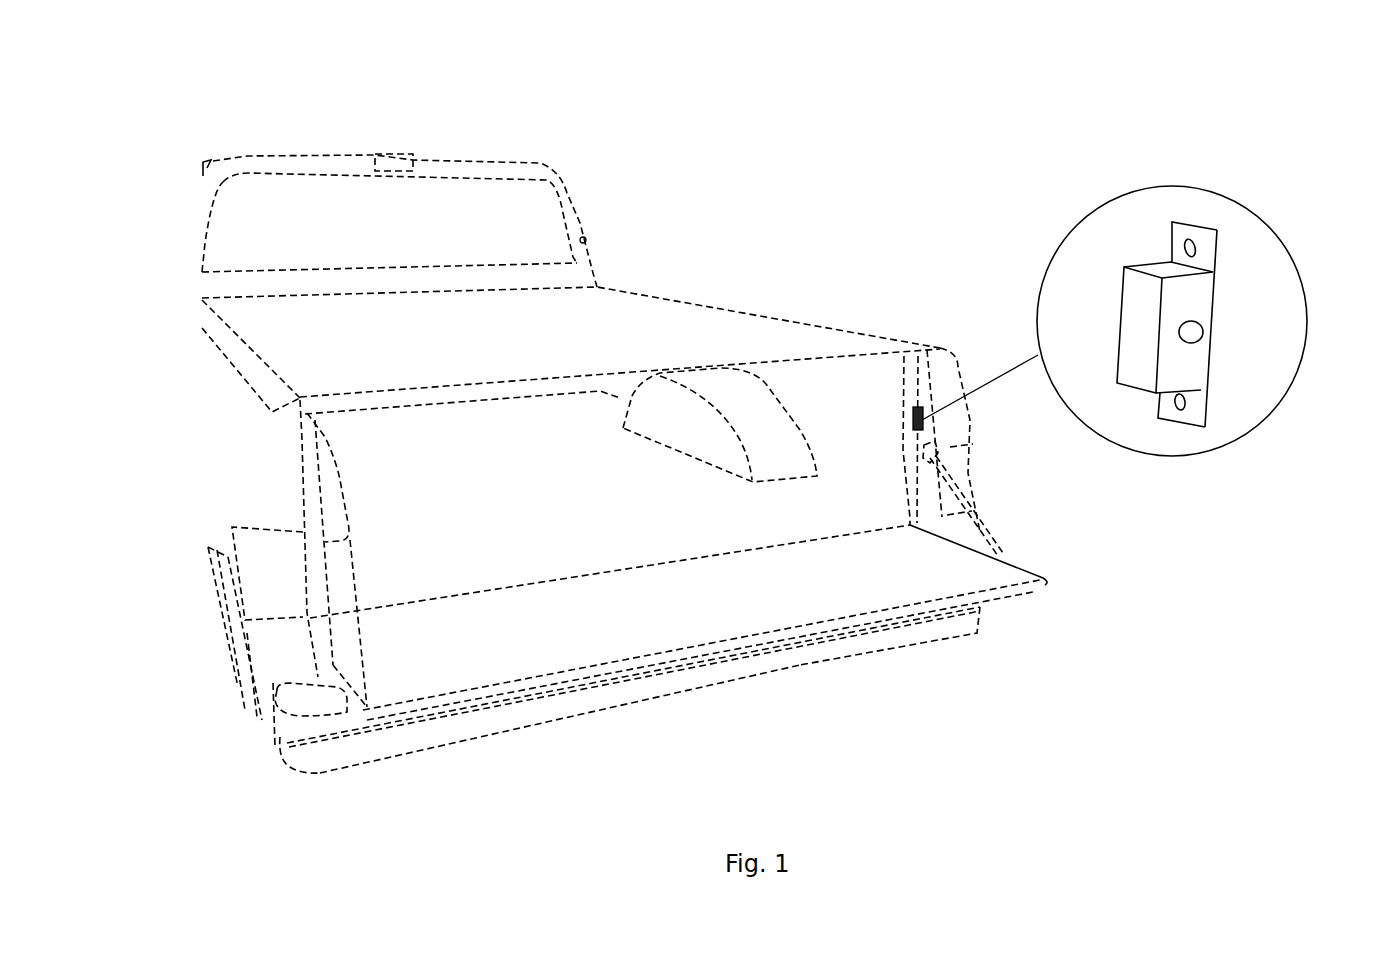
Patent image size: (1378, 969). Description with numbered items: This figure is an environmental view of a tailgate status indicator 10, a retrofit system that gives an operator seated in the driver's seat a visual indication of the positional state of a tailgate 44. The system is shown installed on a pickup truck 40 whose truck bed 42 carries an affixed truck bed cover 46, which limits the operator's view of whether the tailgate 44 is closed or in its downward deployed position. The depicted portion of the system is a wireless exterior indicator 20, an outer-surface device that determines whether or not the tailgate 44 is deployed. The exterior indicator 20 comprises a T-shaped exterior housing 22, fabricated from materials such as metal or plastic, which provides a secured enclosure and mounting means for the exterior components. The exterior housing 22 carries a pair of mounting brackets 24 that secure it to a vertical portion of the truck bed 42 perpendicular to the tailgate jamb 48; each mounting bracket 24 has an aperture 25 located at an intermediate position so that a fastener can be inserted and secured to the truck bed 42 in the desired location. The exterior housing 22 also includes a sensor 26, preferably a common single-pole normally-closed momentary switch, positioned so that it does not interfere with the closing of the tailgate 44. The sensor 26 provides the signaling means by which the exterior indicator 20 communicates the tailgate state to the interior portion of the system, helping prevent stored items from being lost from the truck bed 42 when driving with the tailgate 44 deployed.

The tailgate status indicator 10 is at (808, 113).
The exterior indicator 20 is at (917, 417).
The exterior housing 22 is at (1170, 371).
The mounting bracket 24 is at (1200, 268).
The aperture 25 is at (1191, 243).
The sensor 26 is at (1198, 336).
The pickup truck 40 is at (435, 162).
The truck bed 42 is at (507, 552).
The tailgate 44 is at (752, 596).
The truck bed cover 46 is at (620, 338).
The tailgate jamb 48 is at (317, 510).